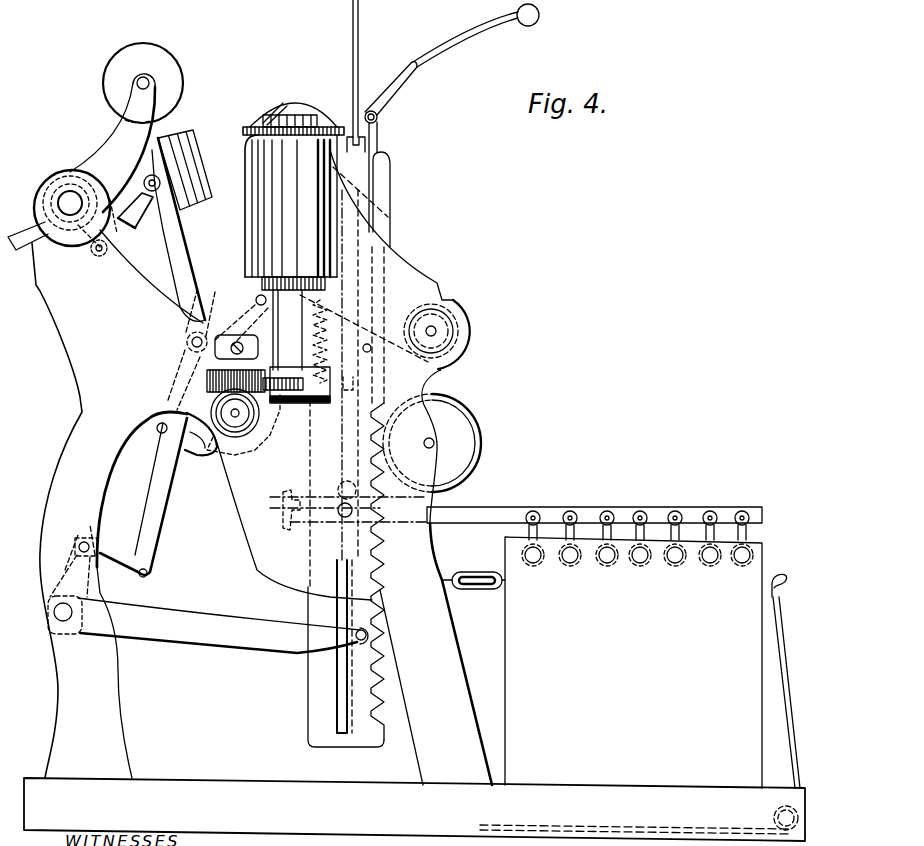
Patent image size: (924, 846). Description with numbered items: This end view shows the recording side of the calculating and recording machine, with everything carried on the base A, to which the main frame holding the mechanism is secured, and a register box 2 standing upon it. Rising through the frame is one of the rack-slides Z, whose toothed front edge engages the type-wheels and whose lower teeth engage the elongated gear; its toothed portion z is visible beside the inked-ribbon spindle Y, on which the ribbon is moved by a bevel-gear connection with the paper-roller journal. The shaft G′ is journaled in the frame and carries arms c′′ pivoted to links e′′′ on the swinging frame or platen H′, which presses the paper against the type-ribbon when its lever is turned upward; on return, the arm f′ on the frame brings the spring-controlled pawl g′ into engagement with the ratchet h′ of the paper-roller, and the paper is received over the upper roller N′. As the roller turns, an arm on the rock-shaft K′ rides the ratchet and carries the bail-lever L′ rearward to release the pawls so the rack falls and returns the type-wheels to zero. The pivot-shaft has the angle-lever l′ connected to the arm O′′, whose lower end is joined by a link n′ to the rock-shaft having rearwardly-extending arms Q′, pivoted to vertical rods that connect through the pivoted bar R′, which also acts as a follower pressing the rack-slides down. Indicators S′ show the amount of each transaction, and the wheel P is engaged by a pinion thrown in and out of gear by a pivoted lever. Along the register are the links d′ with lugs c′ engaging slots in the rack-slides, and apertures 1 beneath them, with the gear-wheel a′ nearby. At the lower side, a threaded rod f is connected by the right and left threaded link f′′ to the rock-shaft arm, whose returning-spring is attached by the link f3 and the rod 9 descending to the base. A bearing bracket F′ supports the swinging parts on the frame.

The base A is at (569, 802).
The register box 2 is at (510, 588).
The rod 9 is at (791, 706).
The link f3 is at (757, 590).
The gear-wheel a′ is at (507, 507).
The links d′ is at (560, 510).
The apertures 1 is at (568, 566).
The threaded rod f is at (449, 578).
The right and left threaded link f′′ is at (500, 597).
The lug c′ is at (483, 455).
The bearing bracket F′ is at (452, 364).
The indicators S′ is at (363, 68).
The arm O′′ is at (366, 146).
The pivoted bar R′ is at (383, 115).
The rack-slides Z is at (396, 182).
The regulating set-screw z is at (346, 575).
The spool or spindle Y is at (293, 253).
The bail-lever L′ is at (245, 190).
The rock-shaft K′ is at (256, 298).
The angle-lever l′ is at (250, 331).
The ratchet h′ is at (238, 455).
The arm f′ is at (157, 427).
The spring-controlled pawl g′ is at (203, 456).
The link n′ is at (87, 561).
The wheel P is at (80, 588).
The rearwardly-extending arms Q′ is at (205, 598).
The upper roller N′ is at (180, 101).
The shaft G′ is at (75, 208).
The arms c′′ is at (95, 256).
The links e′′′ is at (139, 201).
The swinging frame or platen H′ is at (182, 225).